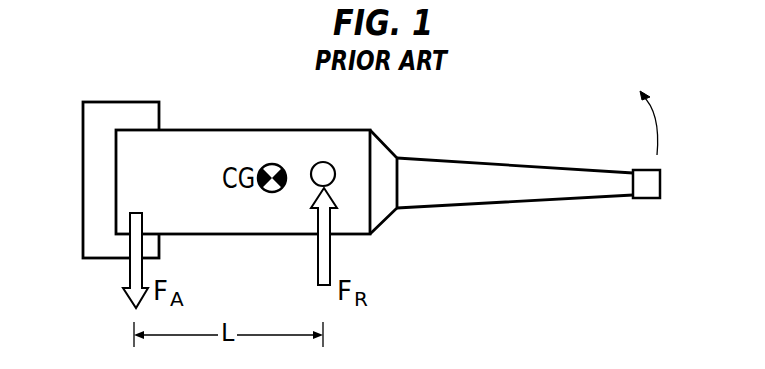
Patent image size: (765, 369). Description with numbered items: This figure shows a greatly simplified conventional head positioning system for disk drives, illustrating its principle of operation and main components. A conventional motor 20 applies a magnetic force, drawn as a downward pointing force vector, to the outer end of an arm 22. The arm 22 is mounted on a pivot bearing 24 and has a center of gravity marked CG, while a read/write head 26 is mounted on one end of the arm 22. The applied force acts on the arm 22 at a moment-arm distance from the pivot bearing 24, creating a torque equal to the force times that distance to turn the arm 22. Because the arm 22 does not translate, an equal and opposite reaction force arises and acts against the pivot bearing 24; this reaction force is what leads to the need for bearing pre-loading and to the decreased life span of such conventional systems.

The motor 20 is at (83, 163).
The arm 22 is at (342, 130).
The pivot bearing 24 is at (322, 162).
The read/write head 26 is at (648, 188).